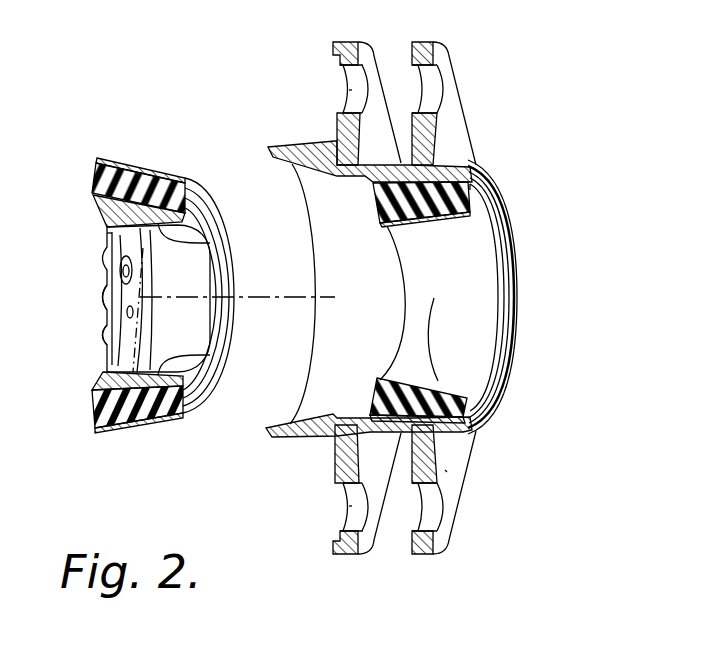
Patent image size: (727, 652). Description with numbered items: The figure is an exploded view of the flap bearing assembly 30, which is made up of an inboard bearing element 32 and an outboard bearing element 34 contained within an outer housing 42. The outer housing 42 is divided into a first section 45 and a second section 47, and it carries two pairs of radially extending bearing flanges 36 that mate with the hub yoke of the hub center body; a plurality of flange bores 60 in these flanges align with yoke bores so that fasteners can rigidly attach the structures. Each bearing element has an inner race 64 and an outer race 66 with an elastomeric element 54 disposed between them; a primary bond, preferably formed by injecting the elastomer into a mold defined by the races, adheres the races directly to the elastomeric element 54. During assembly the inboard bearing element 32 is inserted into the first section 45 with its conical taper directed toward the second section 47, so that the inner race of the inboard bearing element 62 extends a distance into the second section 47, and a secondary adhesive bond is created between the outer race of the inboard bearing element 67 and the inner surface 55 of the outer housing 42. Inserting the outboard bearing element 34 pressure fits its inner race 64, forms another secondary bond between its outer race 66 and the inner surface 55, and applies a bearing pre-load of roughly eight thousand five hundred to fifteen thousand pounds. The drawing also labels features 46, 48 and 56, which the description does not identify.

The flap bearing assembly 30 is at (591, 42).
The inboard bearing element 32 is at (492, 193).
The outboard bearing element 34 is at (92, 173).
The bearing flanges 36 is at (428, 557).
The outer housing 42 is at (480, 172).
The first section 45 is at (447, 470).
The recess 46 is at (105, 294).
The second section 47 is at (105, 328).
The opening 48 is at (120, 270).
The elastomeric element 54 is at (190, 205).
The inner surface 55 is at (482, 348).
The end face 56 is at (107, 235).
The flange bores 60 is at (432, 97).
The inner race of the inboard bearing element 62 is at (438, 215).
The inner race 64 is at (210, 243).
The outer race 66 is at (160, 187).
The outer race of the inboard bearing element 67 is at (485, 180).